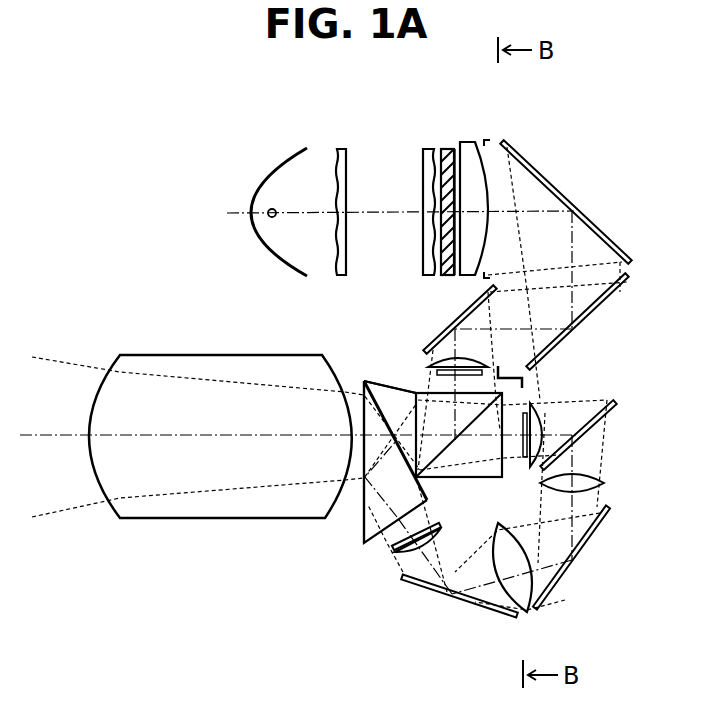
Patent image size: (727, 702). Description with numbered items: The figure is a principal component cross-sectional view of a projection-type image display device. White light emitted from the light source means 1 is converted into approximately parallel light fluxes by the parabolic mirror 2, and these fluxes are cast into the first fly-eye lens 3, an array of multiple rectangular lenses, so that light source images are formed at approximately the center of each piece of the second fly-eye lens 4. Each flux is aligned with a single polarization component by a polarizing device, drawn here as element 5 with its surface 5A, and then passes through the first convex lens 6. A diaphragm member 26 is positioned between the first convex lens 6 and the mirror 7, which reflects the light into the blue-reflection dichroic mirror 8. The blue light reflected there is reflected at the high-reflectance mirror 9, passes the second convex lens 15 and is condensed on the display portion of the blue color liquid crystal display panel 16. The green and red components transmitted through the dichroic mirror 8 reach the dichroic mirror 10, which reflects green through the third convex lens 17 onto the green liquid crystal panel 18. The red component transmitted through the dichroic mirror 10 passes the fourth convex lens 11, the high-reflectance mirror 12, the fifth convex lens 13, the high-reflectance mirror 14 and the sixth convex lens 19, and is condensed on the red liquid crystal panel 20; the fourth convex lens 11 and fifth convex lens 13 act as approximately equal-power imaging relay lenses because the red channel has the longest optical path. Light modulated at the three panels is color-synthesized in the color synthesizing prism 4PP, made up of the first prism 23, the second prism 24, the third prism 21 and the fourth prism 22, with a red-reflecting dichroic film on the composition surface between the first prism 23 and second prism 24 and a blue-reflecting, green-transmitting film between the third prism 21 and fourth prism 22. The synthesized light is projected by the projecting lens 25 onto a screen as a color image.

The light source means 1 is at (268, 210).
The parabolic mirror 2 is at (286, 166).
The first fly-eye lens 3 is at (338, 151).
The second fly-eye lens 4 is at (422, 150).
The polarization conversion element 5 is at (442, 150).
The polarization conversion element surface 5A is at (459, 142).
The first convex lens 6 is at (472, 142).
The diaphragm member 26 is at (488, 141).
The mirror 7 is at (530, 163).
The blue-reflection dichroic mirror 8 is at (625, 283).
The high-reflectance mirror 9 is at (448, 330).
The dichroic mirror 10 is at (616, 404).
The fourth convex lens 11 is at (604, 483).
The high-reflectance mirror 12 is at (603, 528).
The fifth convex lens 13 is at (530, 608).
The high-reflectance mirror 14 is at (437, 590).
The second convex lens 15 is at (440, 378).
The blue color liquid crystal display panel 16 is at (392, 388).
The third convex lens 17 is at (542, 406).
The green liquid crystal panel 18 is at (525, 458).
The sixth convex lens 19 is at (394, 562).
The red liquid crystal panel 20 is at (391, 547).
The third prism 21 is at (528, 378).
The fourth prism 22 is at (440, 478).
The first prism 23 is at (364, 532).
The second prism 24 is at (364, 383).
The projecting lens 25 is at (200, 355).
The color synthesizing prism 4PP is at (345, 400).